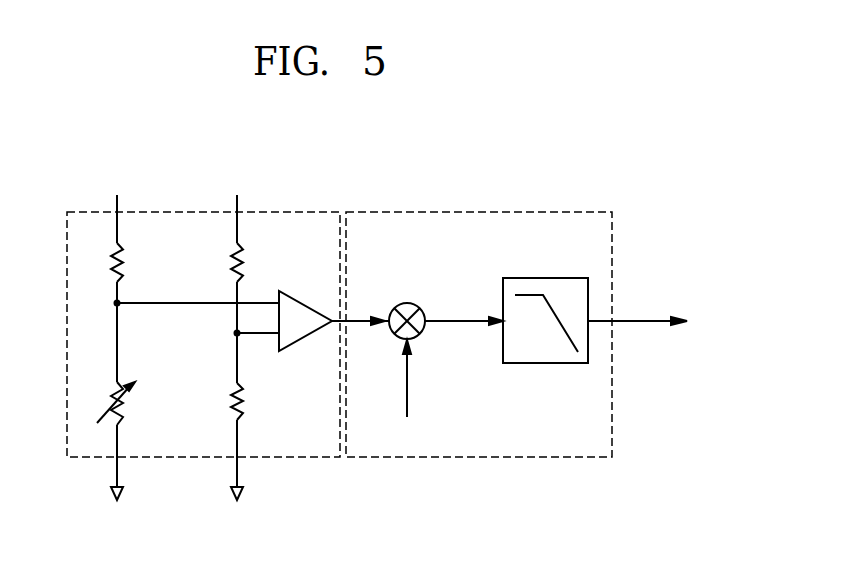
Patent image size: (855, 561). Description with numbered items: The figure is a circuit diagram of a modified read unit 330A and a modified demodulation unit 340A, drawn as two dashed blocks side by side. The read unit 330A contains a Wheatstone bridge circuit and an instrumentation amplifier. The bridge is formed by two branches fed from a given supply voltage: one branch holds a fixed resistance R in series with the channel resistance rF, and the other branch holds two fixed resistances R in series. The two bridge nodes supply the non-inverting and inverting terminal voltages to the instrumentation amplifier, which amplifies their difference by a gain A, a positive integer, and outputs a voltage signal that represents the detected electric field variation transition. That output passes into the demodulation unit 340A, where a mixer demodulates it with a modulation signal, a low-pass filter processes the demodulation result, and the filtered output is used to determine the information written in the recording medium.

The read unit 330A is at (303, 212).
The demodulation unit 340A is at (529, 212).
The resistance R is at (189, 331).
The resistance of the channel rF is at (121, 403).
The gain of the instrumentation amplifier A is at (332, 321).